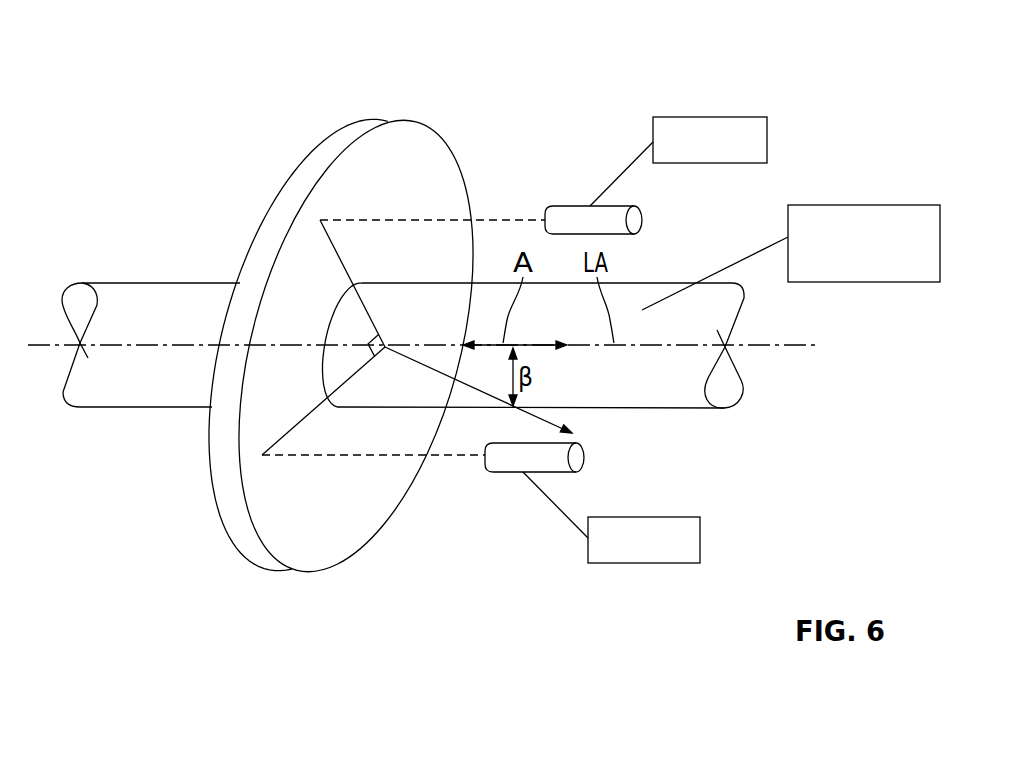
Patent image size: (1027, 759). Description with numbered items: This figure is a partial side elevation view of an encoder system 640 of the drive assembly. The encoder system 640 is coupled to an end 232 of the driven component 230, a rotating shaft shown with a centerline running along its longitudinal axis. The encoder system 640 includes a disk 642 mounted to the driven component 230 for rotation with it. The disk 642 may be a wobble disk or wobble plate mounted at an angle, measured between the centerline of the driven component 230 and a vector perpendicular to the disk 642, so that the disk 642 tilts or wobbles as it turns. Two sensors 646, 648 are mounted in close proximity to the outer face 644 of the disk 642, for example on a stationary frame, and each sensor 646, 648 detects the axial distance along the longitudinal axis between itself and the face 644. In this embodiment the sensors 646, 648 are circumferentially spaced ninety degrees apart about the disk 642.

The encoder system 640 is at (548, 77).
The disk 642 is at (346, 320).
The outer face 644 is at (420, 186).
The sensor 646 is at (725, 117).
The sensor 648 is at (660, 517).
The driven component 230 is at (860, 205).
The end 232 is at (212, 468).